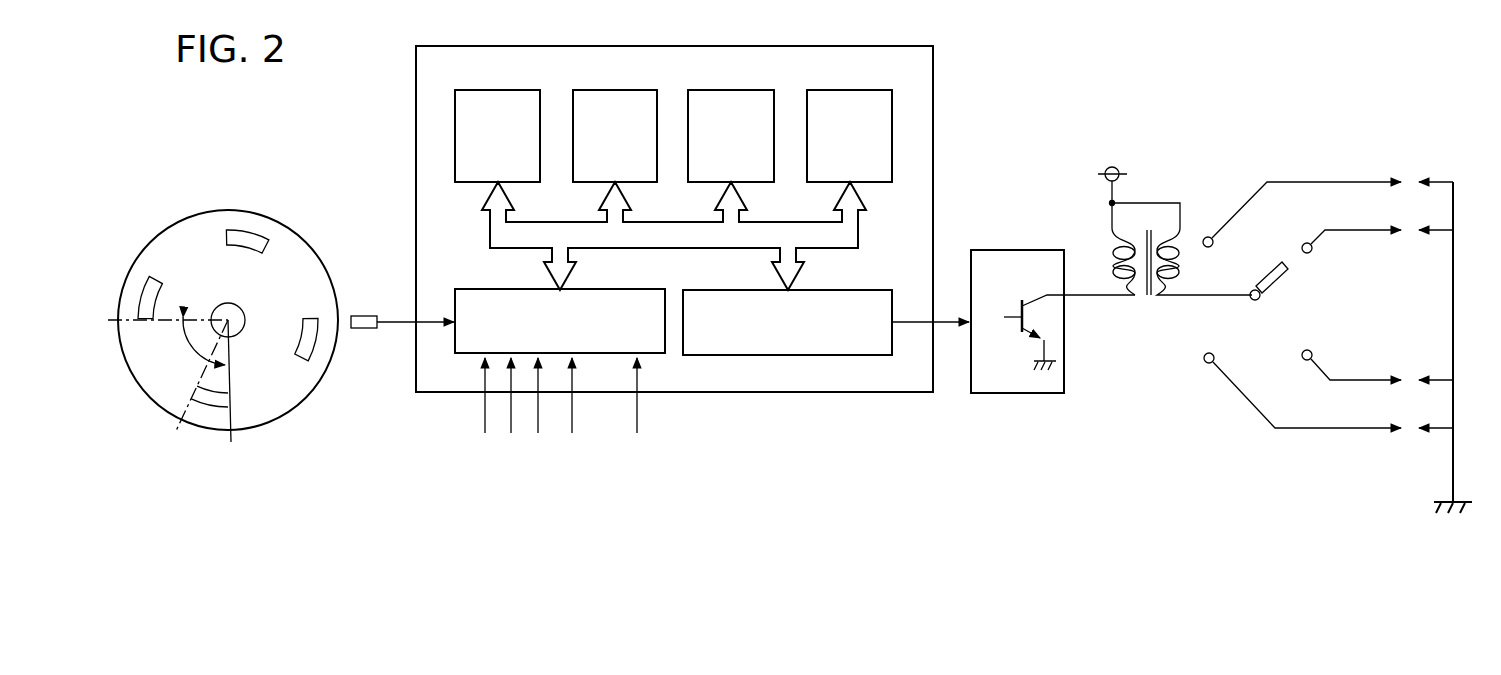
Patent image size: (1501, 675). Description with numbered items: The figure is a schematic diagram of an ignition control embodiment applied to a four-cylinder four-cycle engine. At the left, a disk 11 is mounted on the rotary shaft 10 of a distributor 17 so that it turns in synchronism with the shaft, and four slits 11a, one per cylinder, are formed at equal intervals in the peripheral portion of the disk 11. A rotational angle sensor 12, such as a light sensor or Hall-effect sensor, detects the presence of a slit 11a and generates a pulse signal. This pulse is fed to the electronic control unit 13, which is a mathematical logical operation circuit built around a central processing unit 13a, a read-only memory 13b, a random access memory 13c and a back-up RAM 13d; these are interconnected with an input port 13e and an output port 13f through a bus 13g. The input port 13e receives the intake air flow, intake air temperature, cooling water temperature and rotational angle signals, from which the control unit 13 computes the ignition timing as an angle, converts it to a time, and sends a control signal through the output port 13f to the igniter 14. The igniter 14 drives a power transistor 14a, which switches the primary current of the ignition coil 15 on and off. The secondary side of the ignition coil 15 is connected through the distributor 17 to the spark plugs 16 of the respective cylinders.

The rotary shaft 10 is at (228, 303).
The disk 11 is at (313, 282).
The slits 11a is at (243, 229).
The rotational angle sensor 12 is at (363, 330).
The electronic control unit 13 is at (933, 76).
The central processing unit 13a is at (500, 90).
The read-only memory 13b is at (614, 90).
The random access memory 13c is at (726, 90).
The back-up RAM 13d is at (850, 90).
The input port 13e is at (497, 289).
The output port 13f is at (717, 290).
The bus 13g is at (840, 248).
The igniter 14 is at (1012, 250).
The power transistor 14a is at (1030, 335).
The ignition coil 15 is at (1148, 300).
The spark plugs 16 is at (1408, 178).
The distributor 17 is at (1243, 262).